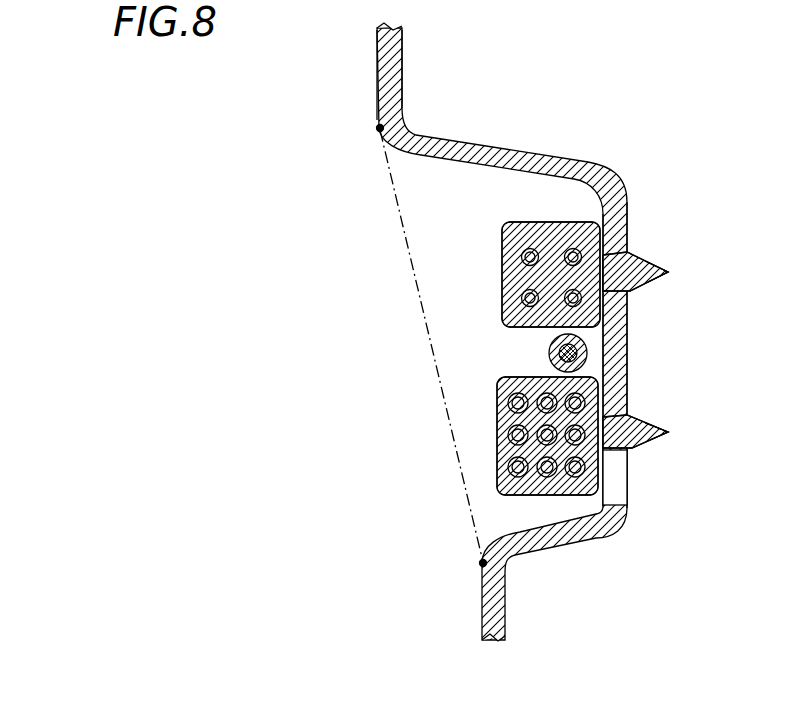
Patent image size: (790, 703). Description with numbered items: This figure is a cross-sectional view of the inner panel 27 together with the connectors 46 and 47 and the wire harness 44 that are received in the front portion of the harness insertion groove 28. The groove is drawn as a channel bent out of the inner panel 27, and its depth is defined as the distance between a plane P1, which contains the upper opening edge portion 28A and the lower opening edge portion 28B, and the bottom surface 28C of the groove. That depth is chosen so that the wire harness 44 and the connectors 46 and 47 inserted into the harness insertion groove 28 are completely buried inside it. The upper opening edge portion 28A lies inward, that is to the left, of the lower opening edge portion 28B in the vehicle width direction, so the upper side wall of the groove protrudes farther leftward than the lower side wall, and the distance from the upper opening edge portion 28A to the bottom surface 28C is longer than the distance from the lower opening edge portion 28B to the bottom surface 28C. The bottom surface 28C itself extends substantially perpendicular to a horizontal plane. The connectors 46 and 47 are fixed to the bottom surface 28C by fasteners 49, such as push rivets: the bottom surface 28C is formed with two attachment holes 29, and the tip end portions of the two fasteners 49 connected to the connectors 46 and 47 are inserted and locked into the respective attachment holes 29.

The inner panel 27 is at (377, 56).
The harness insertion groove 28 is at (590, 183).
The upper opening edge portion 28A is at (379, 128).
The lower opening edge portion 28B is at (482, 563).
The bottom surface 28C is at (603, 350).
The attachment hole 29 is at (637, 256).
The fastener 49 is at (669, 273).
The connector 46 is at (502, 272).
The connector 47 is at (497, 430).
The wire harness 44 is at (549, 353).
The plane P1 is at (425, 313).